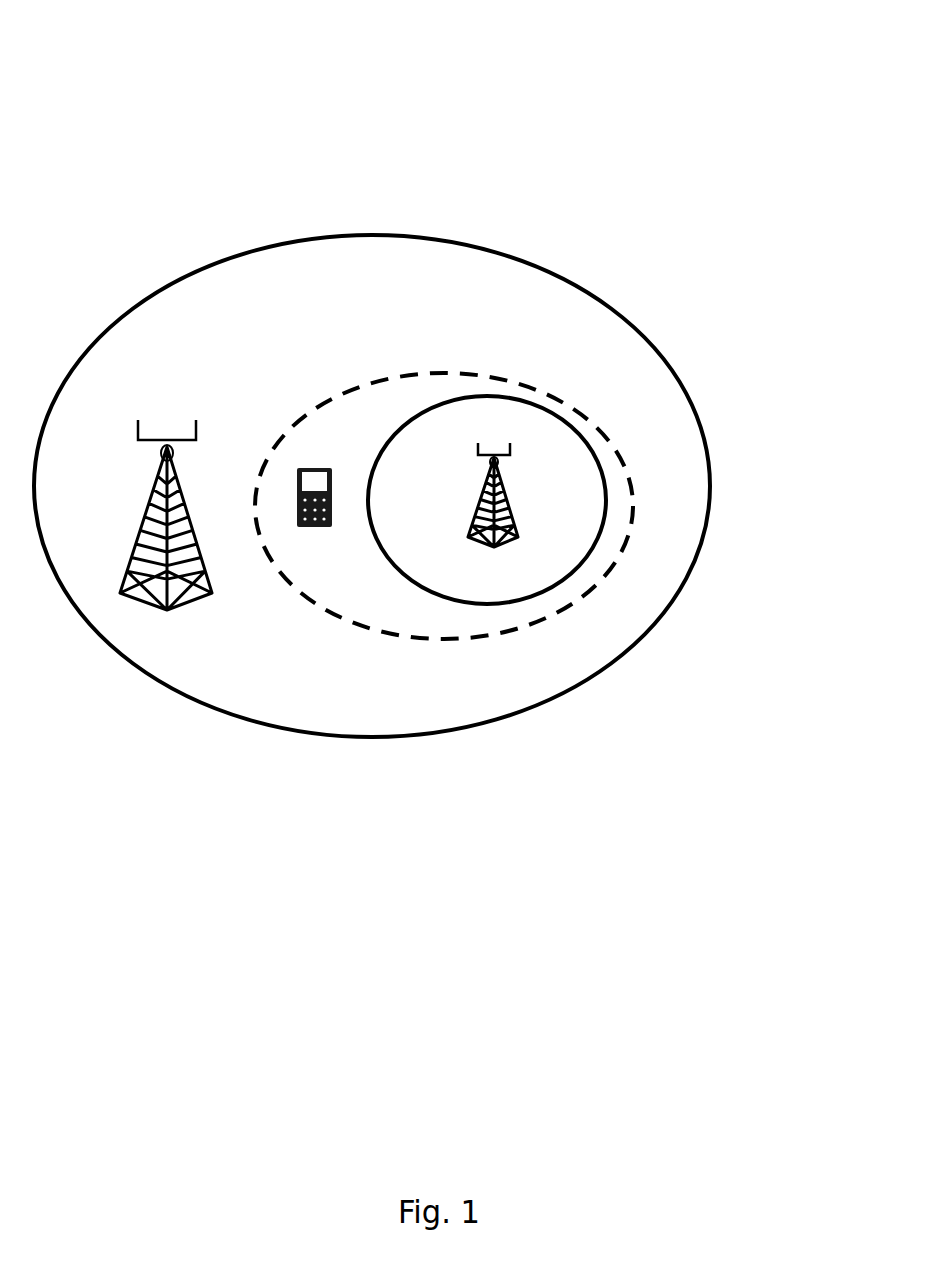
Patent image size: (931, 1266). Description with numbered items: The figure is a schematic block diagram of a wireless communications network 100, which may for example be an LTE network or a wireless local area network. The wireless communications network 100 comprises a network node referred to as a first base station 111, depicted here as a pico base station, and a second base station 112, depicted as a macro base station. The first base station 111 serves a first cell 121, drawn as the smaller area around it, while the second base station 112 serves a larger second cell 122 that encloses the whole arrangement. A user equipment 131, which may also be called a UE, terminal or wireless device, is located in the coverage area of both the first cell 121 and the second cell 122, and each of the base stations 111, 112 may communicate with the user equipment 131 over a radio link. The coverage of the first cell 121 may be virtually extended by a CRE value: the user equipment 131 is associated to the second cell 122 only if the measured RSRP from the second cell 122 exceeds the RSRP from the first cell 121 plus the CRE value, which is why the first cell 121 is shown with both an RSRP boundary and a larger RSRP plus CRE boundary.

The wireless communications network 100 is at (278, 133).
The first base station 111 is at (500, 462).
The second base station 112 is at (136, 442).
The first cell 121 is at (380, 383).
The second cell 122 is at (147, 678).
The user equipment 131 is at (300, 466).